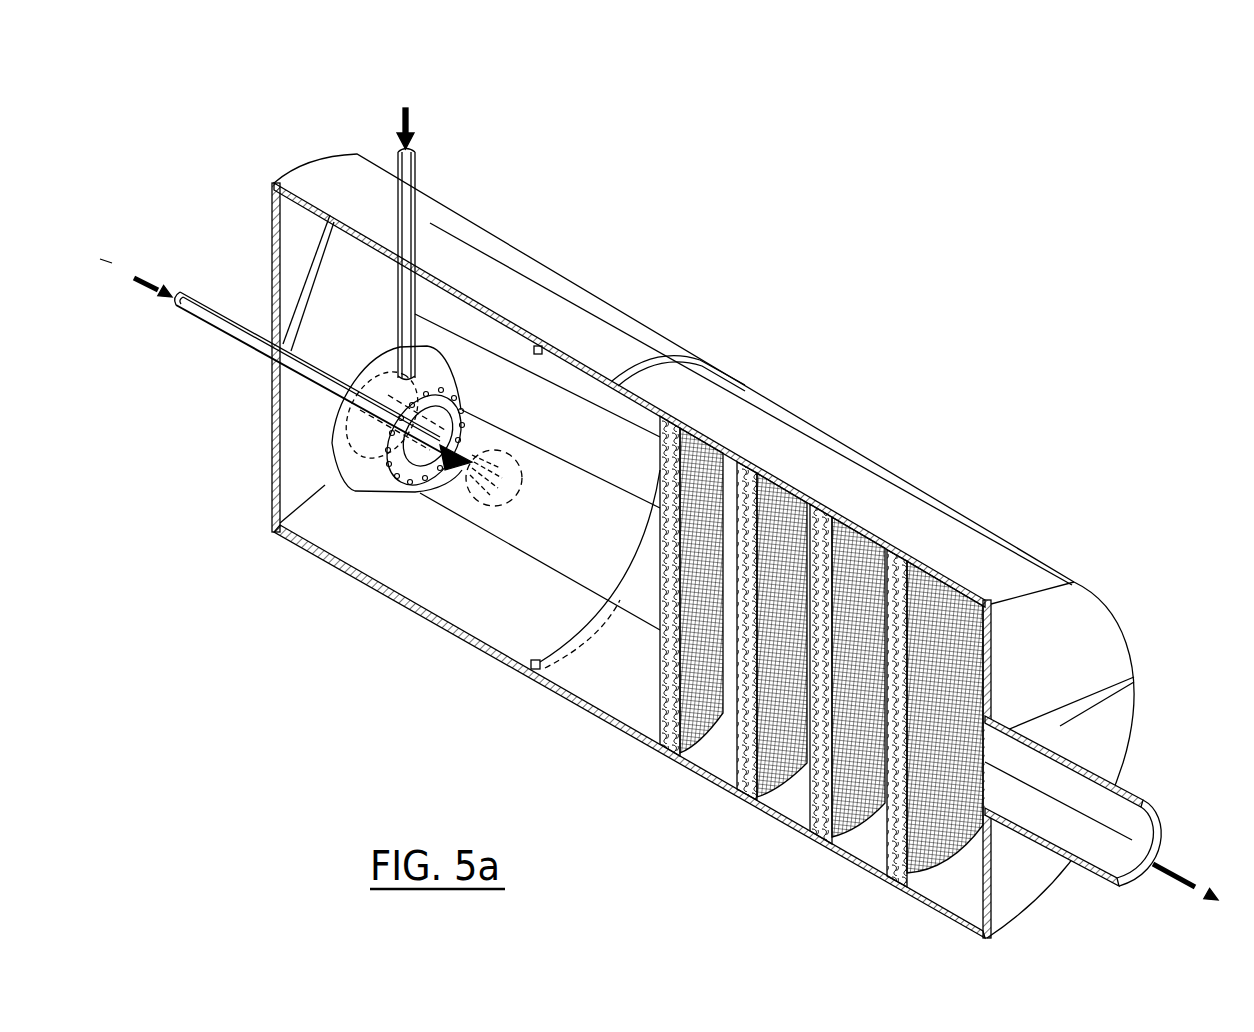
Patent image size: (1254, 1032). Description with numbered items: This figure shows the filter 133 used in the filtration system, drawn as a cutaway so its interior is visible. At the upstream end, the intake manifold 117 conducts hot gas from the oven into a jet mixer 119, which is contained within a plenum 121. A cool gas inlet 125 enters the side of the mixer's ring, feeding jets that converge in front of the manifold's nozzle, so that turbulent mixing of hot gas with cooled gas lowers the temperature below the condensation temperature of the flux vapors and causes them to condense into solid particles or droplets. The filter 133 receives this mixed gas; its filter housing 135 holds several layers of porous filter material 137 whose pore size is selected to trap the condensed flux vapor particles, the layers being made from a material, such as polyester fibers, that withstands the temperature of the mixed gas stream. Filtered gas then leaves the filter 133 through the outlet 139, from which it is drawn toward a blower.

The intake manifold 117 is at (212, 323).
The jet mixer 119 is at (413, 518).
The plenum 121 is at (533, 262).
The cool gas inlet 125 is at (417, 162).
The filter 133 is at (941, 368).
The filter housing 135 is at (985, 536).
The porous filter material 137 is at (680, 756).
The outlet 139 is at (1143, 800).